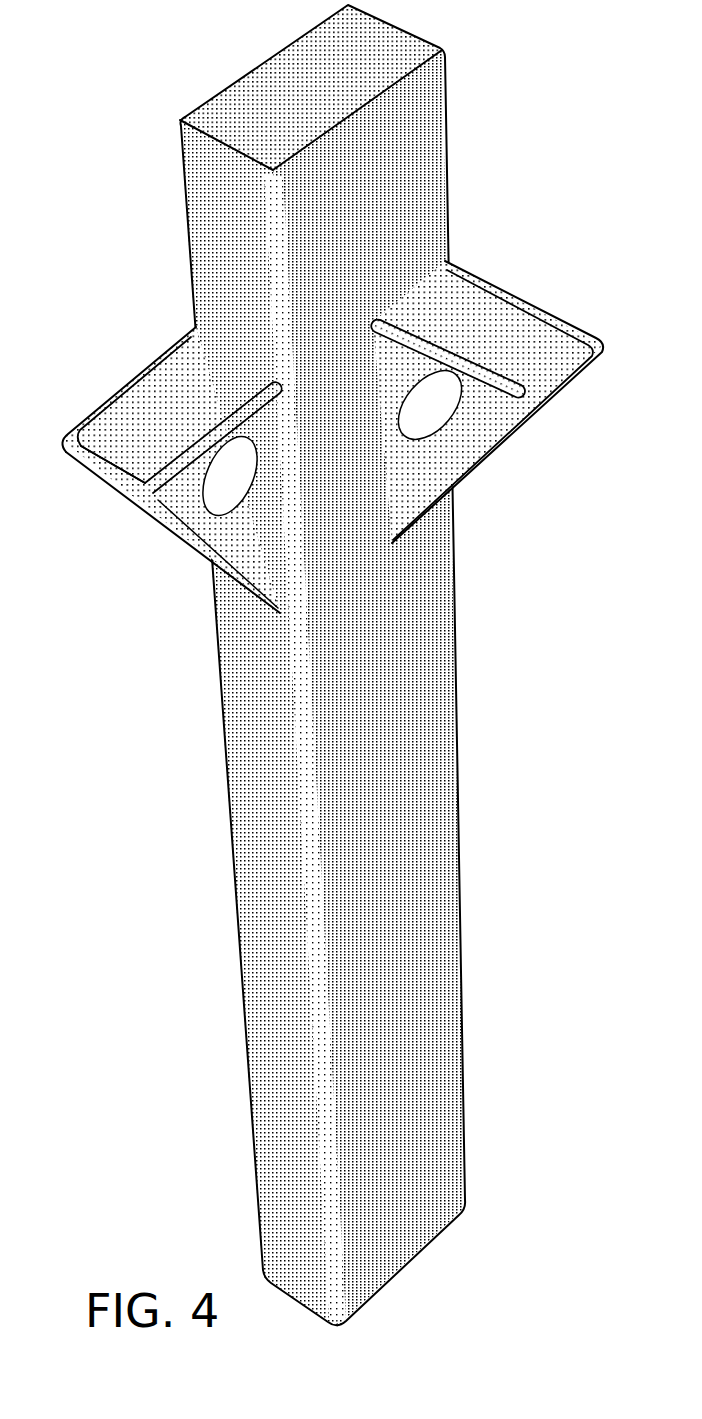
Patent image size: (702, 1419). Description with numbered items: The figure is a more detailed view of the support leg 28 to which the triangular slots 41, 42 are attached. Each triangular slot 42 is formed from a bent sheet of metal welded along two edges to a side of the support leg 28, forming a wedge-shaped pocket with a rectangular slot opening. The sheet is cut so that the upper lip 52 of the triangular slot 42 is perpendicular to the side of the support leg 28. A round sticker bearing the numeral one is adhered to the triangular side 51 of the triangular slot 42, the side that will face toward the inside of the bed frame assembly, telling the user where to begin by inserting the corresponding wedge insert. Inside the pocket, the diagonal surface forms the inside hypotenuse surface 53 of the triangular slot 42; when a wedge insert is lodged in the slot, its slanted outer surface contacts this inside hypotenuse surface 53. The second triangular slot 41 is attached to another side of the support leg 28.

The support leg 28 is at (192, 116).
The triangular slot 41 is at (543, 309).
The triangular slot 42 is at (141, 515).
The triangular side 51 is at (230, 489).
The upper lip 52 is at (121, 389).
The inside hypotenuse surface 53 is at (121, 456).